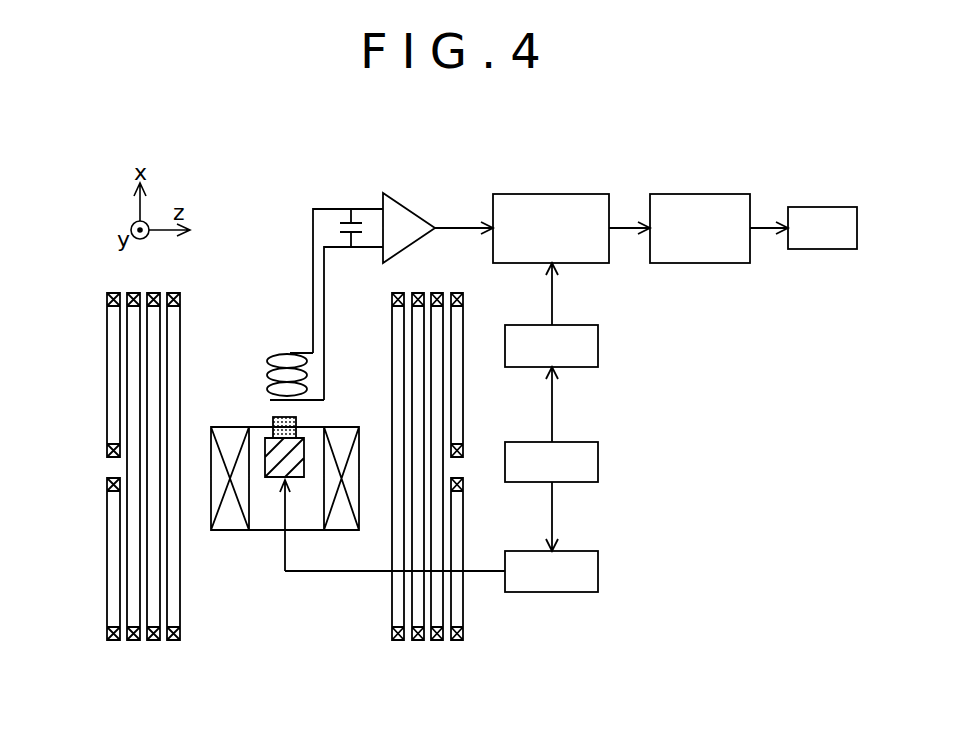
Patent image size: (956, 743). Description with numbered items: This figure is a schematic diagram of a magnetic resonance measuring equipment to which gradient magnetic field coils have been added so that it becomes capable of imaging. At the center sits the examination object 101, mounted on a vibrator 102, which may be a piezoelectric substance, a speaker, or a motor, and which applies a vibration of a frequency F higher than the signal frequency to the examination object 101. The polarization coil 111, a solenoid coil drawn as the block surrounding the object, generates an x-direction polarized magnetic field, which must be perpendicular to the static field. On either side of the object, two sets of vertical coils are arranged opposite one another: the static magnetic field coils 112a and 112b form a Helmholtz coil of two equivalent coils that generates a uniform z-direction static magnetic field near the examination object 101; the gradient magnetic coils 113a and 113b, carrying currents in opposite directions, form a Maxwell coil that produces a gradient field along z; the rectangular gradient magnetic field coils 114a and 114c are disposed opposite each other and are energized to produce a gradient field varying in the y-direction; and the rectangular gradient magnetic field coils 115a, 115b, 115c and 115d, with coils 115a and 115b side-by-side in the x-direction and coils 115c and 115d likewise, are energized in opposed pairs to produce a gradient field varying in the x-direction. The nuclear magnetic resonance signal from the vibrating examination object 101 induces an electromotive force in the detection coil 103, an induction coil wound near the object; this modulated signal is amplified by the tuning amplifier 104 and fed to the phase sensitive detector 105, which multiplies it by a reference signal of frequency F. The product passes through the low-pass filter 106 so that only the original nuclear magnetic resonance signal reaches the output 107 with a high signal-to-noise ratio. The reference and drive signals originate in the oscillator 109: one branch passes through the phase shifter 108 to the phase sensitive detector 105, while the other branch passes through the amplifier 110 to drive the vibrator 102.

The examination object 101 is at (272, 417).
The vibrator 102 is at (300, 440).
The detection coil 103 is at (270, 350).
The tuning amplifier 104 is at (370, 188).
The phase sensitive detector 105 is at (545, 193).
The low-pass filter 106 is at (690, 193).
The output 107 is at (812, 207).
The phase shifter 108 is at (598, 333).
The oscillator 109 is at (598, 462).
The amplifier 110 is at (598, 570).
The polarization coil 111 is at (230, 530).
The static magnetic field coil 112a is at (172, 643).
The static magnetic field coil 112b is at (395, 643).
The gradient magnetic coil 113a is at (150, 643).
The gradient magnetic coil 113b is at (417, 643).
The gradient magnetic field coil 114a is at (128, 643).
The gradient magnetic field coil 114c is at (437, 643).
The gradient magnetic field coil 115a is at (107, 350).
The gradient magnetic field coil 115b is at (107, 565).
The gradient magnetic field coil 115c is at (462, 372).
The gradient magnetic field coil 115d is at (463, 587).